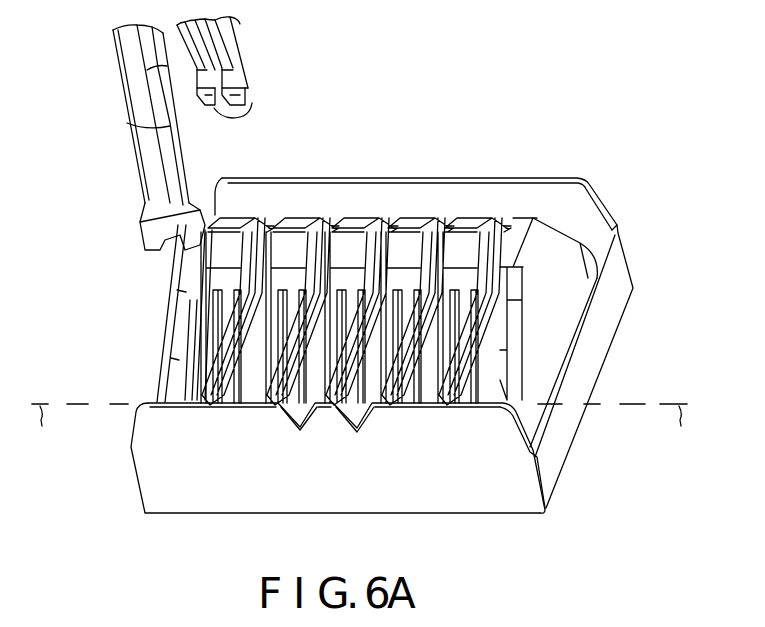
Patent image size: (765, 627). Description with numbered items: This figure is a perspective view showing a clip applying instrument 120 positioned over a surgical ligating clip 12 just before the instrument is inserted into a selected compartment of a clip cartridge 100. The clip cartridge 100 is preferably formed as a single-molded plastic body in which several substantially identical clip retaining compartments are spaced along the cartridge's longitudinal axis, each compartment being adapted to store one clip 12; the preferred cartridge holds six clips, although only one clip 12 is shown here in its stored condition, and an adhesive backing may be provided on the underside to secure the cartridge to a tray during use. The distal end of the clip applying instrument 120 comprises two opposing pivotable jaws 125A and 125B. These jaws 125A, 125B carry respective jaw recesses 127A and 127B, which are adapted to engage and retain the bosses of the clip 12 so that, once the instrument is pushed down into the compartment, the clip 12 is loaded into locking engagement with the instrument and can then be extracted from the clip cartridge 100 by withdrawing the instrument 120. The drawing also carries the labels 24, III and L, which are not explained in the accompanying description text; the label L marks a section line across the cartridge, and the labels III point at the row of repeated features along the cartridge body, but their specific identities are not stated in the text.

The clip cartridge 100 is at (678, 90).
The clip applying instrument 120 is at (70, 85).
The pivotable jaw 125A is at (128, 158).
The pivotable jaw 125B is at (237, 36).
The jaw recess 127A is at (190, 192).
The jaw recess 127B is at (252, 100).
The clip 12 is at (197, 267).
The contact terminal 24 is at (203, 335).
The terminal section III is at (194, 146).
The section line L- L is at (361, 427).